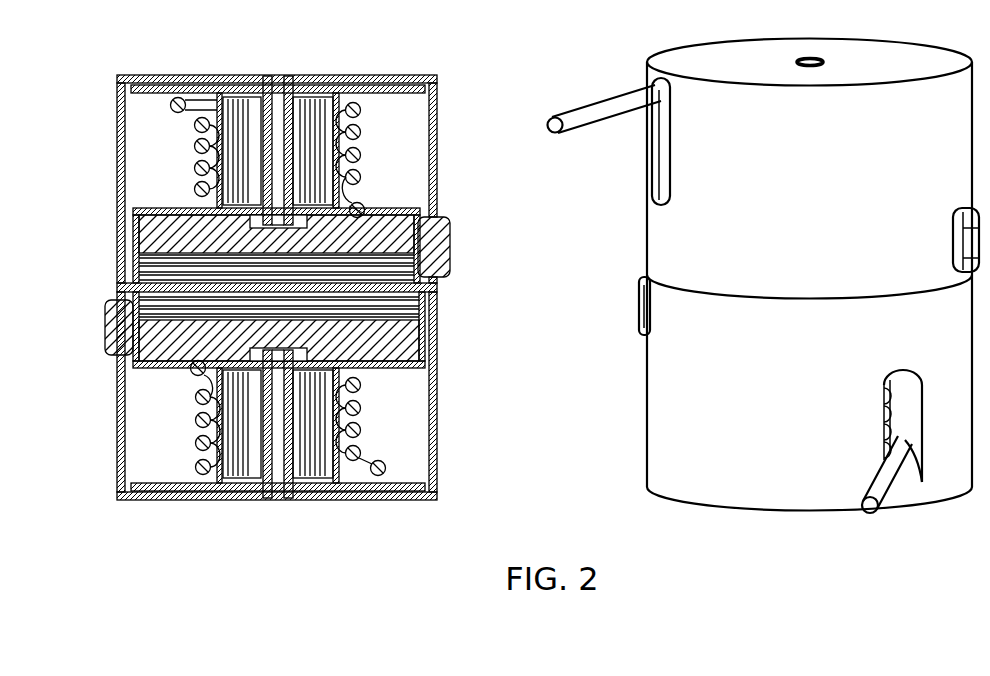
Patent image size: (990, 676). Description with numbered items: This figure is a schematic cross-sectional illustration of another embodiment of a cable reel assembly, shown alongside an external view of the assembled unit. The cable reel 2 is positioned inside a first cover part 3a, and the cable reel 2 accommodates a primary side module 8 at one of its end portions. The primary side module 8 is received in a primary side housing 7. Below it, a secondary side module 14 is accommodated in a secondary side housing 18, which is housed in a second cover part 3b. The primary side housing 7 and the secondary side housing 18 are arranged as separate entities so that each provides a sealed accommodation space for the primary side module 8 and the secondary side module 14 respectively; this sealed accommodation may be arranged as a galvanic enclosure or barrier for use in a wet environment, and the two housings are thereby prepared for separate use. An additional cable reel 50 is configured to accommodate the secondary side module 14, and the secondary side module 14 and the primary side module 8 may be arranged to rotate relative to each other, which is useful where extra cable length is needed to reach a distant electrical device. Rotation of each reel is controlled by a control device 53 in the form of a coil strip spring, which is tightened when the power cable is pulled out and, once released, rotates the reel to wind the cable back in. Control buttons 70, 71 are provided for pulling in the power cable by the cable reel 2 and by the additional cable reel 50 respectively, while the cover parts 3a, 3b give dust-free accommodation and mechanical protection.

The cable reel 2 is at (380, 140).
The first cover part 3a is at (437, 162).
The second cover part 3b is at (437, 484).
The primary side housing 7 is at (420, 210).
The primary side module 8 is at (390, 208).
The secondary side module 14 is at (425, 332).
The secondary side housing 18 is at (420, 302).
The additional cable reel 50 is at (393, 445).
The control device 53 is at (353, 108).
The control button 70 is at (450, 250).
The control button 71 is at (112, 338).